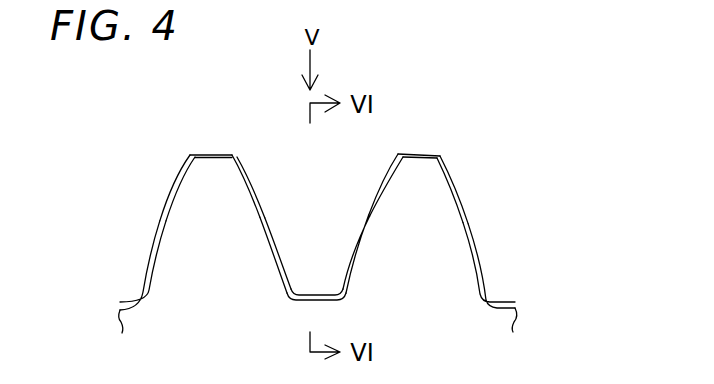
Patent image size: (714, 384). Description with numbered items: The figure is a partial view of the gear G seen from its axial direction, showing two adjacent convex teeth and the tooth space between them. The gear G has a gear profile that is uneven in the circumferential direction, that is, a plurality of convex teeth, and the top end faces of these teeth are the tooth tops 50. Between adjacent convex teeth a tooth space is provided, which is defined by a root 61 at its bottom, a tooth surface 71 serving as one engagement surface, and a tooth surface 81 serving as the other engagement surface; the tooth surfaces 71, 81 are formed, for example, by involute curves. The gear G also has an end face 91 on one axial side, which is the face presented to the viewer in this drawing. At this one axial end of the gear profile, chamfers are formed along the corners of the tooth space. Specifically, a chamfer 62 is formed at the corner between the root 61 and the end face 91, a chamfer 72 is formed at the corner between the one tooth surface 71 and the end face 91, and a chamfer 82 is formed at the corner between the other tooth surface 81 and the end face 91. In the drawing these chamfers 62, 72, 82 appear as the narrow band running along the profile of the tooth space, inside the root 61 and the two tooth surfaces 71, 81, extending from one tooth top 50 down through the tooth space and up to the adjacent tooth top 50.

The gear G is at (512, 148).
The tooth top 50 is at (208, 154).
The end face 91 is at (203, 198).
The tooth surface 81 is at (167, 205).
The chamfer 82 is at (154, 247).
The tooth surface 71 is at (249, 184).
The chamfer 72 is at (267, 229).
The root 61 is at (322, 295).
The chamfer 62 is at (309, 299).